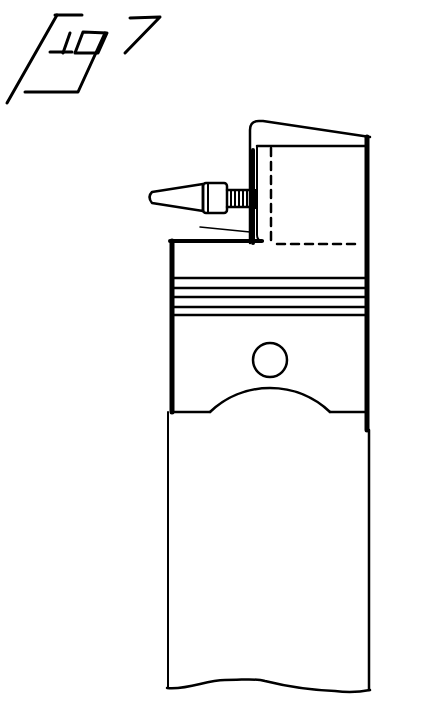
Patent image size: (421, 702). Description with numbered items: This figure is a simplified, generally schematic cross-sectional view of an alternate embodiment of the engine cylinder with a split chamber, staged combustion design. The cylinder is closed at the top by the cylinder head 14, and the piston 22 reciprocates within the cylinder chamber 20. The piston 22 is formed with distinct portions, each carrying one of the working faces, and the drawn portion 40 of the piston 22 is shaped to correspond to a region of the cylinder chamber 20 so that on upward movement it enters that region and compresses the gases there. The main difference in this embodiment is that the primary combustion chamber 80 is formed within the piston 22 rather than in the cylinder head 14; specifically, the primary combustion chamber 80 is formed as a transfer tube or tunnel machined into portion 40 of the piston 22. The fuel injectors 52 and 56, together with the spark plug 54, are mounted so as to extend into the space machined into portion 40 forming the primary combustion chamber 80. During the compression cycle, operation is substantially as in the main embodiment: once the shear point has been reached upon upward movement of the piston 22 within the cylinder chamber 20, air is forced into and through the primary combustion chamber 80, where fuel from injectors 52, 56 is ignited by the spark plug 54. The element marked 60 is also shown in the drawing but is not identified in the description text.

The cylinder head 14 is at (253, 152).
The cylinder chamber 20 is at (277, 495).
The piston 22 is at (343, 375).
The portion of the piston 40 is at (347, 239).
The fuel injector 52 is at (188, 238).
The spark plug 54 is at (173, 207).
The fuel injector 56 is at (219, 143).
The cap 60 is at (290, 125).
The primary combustion chamber 80 is at (270, 183).